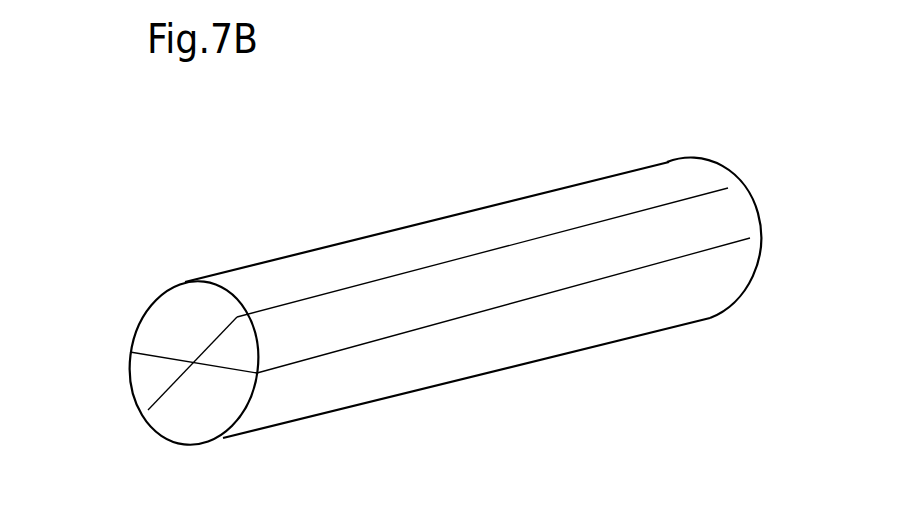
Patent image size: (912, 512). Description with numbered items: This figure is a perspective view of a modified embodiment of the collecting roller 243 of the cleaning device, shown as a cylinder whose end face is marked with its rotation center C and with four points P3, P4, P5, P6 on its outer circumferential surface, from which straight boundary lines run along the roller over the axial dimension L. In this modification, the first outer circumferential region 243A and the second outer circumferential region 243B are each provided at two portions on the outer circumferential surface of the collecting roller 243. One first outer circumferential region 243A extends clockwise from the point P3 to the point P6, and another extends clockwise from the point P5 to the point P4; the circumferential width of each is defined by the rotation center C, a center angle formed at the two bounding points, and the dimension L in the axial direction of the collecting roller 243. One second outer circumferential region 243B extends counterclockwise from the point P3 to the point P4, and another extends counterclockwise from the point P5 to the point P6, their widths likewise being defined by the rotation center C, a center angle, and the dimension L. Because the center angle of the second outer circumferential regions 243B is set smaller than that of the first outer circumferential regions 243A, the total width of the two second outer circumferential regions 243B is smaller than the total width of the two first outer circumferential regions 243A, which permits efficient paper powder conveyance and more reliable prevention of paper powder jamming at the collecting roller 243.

The collecting roller 243 is at (530, 160).
The first outer circumferential region 243A is at (468, 222).
The second outer circumferential region 243B is at (137, 390).
The dimension in the axial direction L is at (367, 283).
The rotation center C is at (193, 362).
The point P3 is at (237, 317).
The point P4 is at (260, 373).
The point P5 is at (148, 410).
The point P6 is at (130, 352).